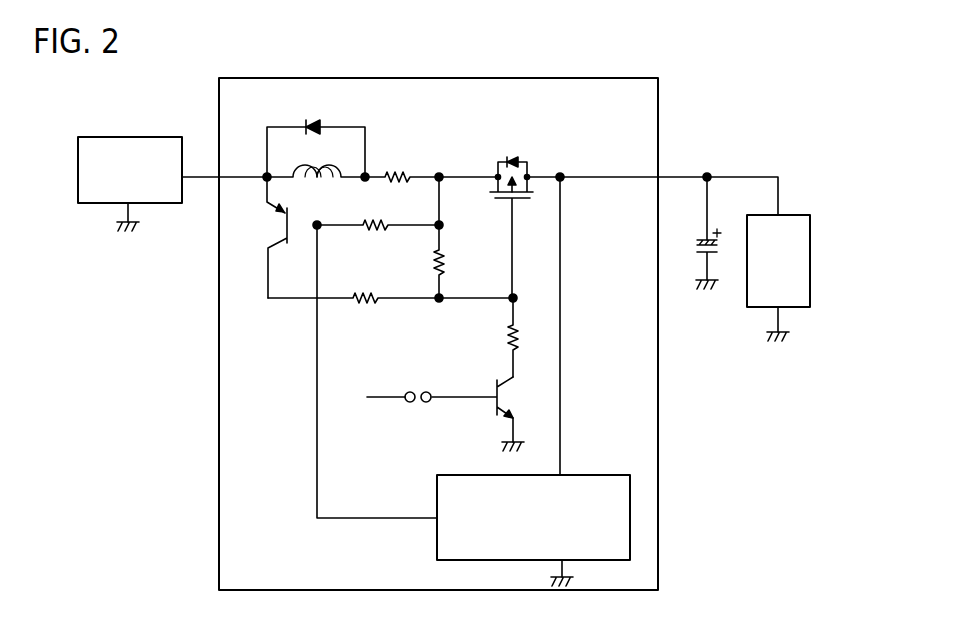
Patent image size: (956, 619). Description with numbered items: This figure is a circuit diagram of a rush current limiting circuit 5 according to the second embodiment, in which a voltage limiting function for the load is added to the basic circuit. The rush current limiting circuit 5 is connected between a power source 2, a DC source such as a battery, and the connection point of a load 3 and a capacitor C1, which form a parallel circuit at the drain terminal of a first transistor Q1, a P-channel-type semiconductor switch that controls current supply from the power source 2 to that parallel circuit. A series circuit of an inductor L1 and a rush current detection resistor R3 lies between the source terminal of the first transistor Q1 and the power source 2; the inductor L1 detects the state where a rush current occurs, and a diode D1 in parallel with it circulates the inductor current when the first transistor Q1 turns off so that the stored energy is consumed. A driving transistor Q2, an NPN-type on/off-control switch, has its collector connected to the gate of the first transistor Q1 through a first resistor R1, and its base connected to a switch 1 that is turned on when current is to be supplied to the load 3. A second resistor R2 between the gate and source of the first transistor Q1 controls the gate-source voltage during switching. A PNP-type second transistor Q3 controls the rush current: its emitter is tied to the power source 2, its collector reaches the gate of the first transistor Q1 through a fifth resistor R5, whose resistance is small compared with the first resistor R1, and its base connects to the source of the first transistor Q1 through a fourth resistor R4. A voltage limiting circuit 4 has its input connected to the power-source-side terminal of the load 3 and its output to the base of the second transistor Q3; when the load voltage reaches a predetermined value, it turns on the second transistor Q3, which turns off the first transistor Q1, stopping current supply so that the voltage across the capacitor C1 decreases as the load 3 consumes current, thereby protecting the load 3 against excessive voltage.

The switch 1 is at (415, 382).
The power source 2 is at (128, 136).
The load 3 is at (793, 211).
The voltage limiting circuit 4 is at (587, 471).
The rush current limiting circuit 5 is at (667, 117).
The diode D1 is at (317, 131).
The inductor L1 is at (316, 156).
The first resistor R1 is at (531, 337).
The second resistor R2 is at (421, 261).
The rush current detection resistor R3 is at (402, 162).
The fourth resistor R4 is at (378, 203).
The fifth resistor R5 is at (392, 284).
The first transistor Q1 is at (511, 211).
The driving transistor Q2 is at (491, 414).
The second transistor Q3 is at (259, 237).
The capacitor C1 is at (693, 233).